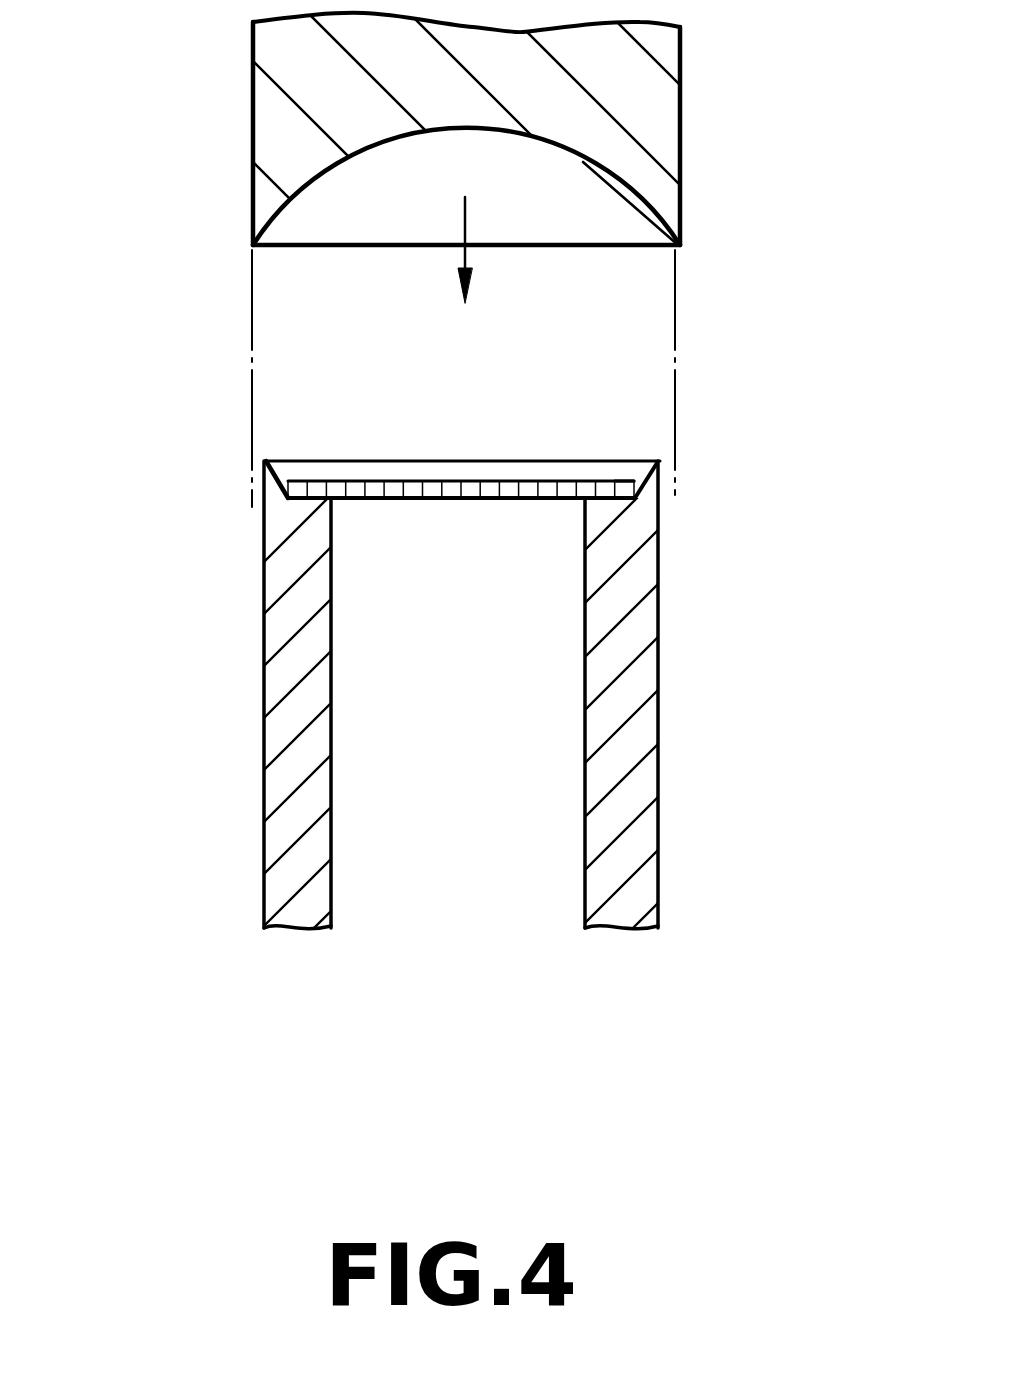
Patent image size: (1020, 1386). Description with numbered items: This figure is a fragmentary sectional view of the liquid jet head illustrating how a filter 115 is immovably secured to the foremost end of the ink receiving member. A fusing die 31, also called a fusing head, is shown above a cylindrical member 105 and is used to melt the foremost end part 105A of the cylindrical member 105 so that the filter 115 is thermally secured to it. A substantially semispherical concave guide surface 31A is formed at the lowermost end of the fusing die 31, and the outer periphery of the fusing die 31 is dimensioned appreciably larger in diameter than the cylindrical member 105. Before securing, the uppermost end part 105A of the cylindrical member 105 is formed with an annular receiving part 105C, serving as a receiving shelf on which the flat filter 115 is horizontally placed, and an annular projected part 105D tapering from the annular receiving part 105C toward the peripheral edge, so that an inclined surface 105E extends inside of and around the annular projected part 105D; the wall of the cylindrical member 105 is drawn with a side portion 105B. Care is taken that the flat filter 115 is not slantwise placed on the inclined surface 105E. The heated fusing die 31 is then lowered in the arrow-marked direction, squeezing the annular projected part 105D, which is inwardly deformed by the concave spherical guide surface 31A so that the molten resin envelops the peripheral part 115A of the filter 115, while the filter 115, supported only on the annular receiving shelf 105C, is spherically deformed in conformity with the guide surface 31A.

The fusing die 31 is at (640, 100).
The concave guide surface 31A is at (583, 162).
The cylindrical member 105 is at (476, 665).
The foremost end part 105A is at (287, 524).
The right side wall 105B is at (557, 733).
The annular receiving part 105C is at (394, 500).
The annular projected part 105D is at (647, 492).
The inclined surface 105E is at (290, 455).
The filter 115 is at (441, 481).
The peripheral part of the filter 115A is at (632, 456).